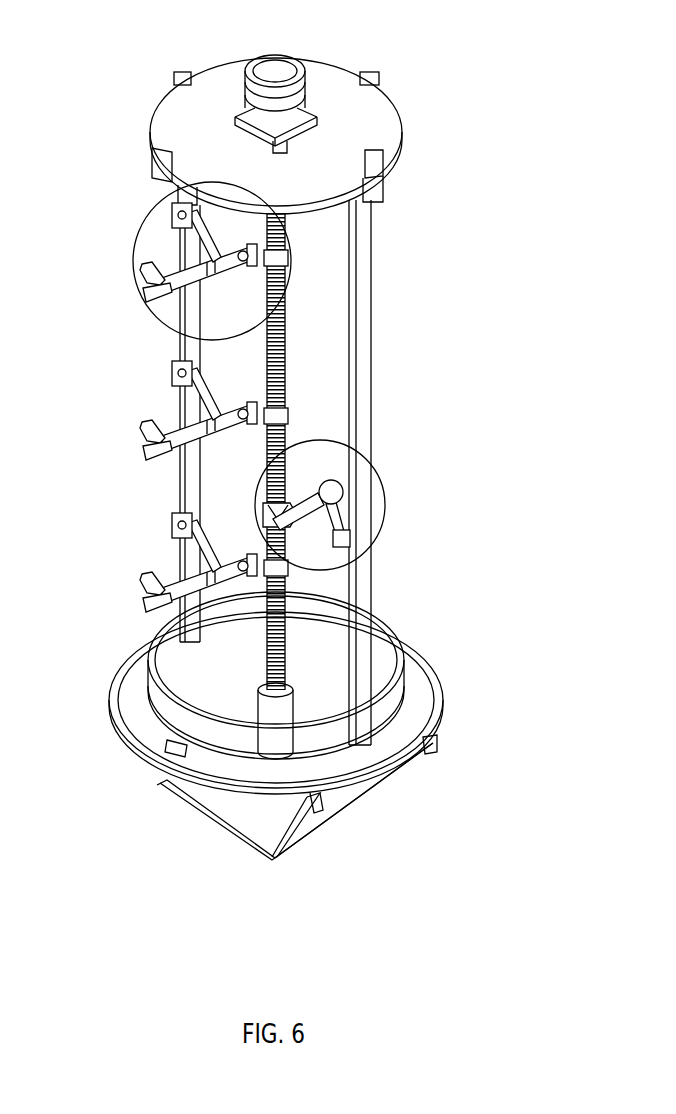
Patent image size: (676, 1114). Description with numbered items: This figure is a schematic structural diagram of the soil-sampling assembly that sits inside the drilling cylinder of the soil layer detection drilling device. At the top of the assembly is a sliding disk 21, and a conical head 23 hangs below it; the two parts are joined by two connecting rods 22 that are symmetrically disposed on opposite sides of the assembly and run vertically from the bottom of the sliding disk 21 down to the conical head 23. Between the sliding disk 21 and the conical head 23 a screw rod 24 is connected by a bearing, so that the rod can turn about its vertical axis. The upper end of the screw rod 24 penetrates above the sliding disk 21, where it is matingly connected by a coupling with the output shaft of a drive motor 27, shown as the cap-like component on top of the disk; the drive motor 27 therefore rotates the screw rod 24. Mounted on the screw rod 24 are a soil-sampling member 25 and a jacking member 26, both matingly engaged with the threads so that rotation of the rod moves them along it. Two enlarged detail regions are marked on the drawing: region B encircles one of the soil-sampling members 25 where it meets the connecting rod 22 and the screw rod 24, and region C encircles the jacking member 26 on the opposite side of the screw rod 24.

The sliding disk 21 is at (363, 165).
The connecting rod 22 is at (363, 248).
The conical head 23 is at (380, 613).
The screw rod 24 is at (287, 343).
The soil-sampling member 25 is at (287, 415).
The jacking member 26 is at (343, 483).
The drive motor 27 is at (308, 103).
The detail region B is at (133, 242).
The detail region C is at (385, 498).